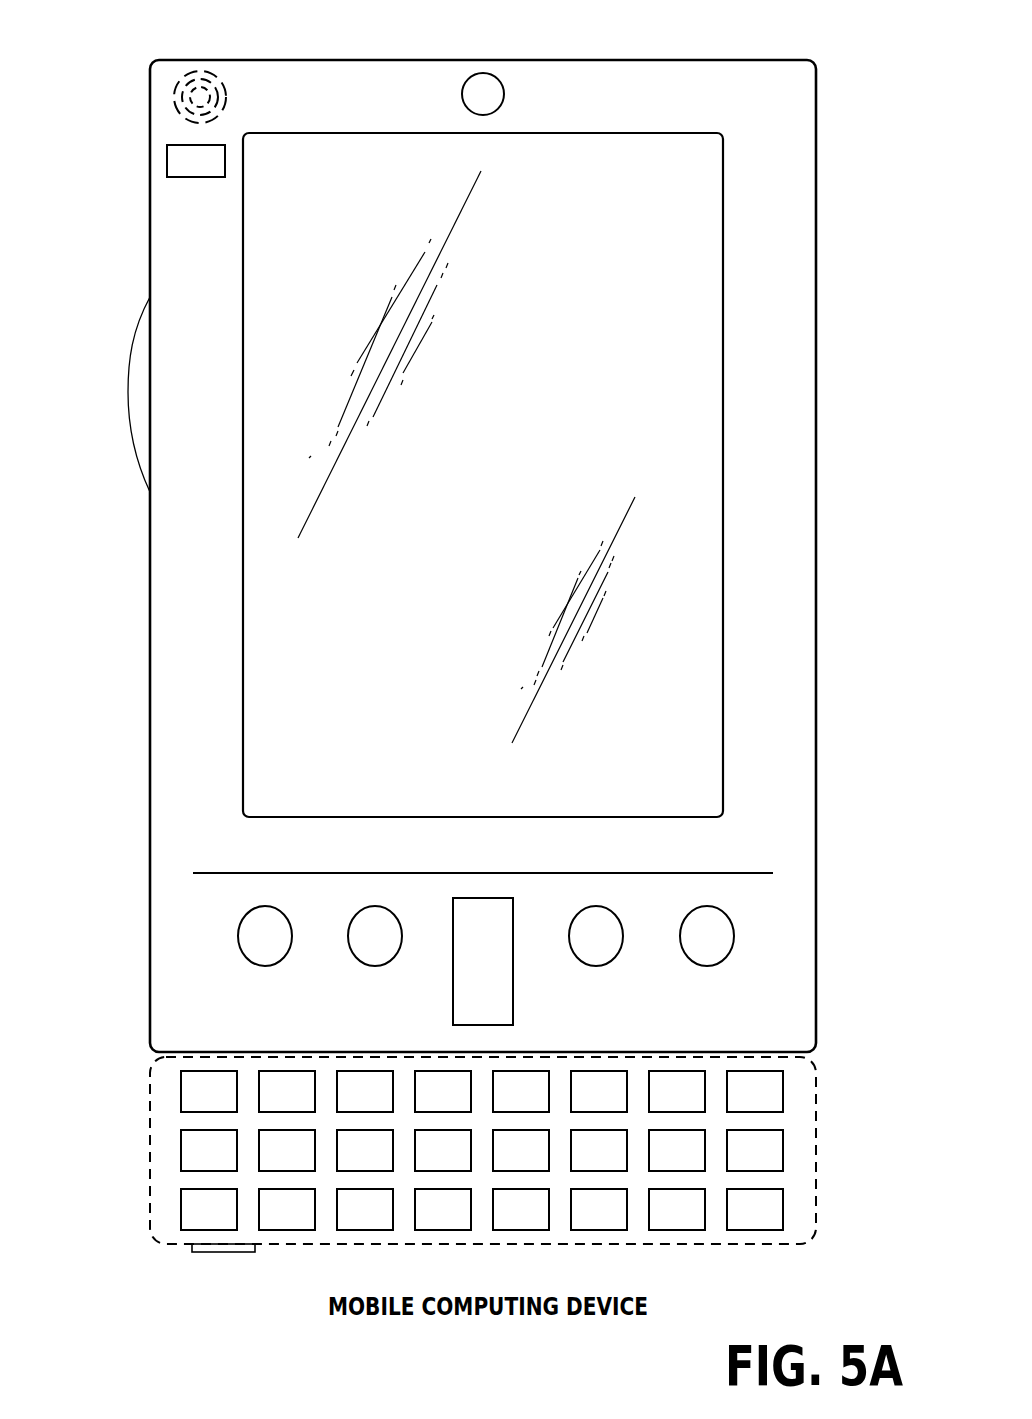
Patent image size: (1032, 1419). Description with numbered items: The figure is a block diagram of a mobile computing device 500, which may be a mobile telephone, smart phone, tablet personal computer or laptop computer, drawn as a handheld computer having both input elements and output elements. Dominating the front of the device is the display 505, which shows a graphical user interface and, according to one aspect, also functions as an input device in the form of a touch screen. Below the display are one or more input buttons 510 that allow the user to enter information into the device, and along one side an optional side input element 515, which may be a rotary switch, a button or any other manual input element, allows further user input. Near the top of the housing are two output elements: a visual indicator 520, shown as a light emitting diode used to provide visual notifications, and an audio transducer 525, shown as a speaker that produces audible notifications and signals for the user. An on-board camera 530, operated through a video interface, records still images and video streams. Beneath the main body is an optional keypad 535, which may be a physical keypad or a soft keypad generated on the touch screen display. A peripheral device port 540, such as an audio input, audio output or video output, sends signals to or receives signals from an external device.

The mobile computing device 500 is at (780, 58).
The display 505 is at (267, 652).
The input buttons 510 is at (265, 966).
The side input element 515 is at (128, 395).
The visual indicator 520 is at (167, 162).
The audio transducer 525 is at (170, 100).
The on-board camera 530 is at (482, 72).
The keypad 535 is at (160, 1150).
The peripheral device port 540 is at (196, 1252).